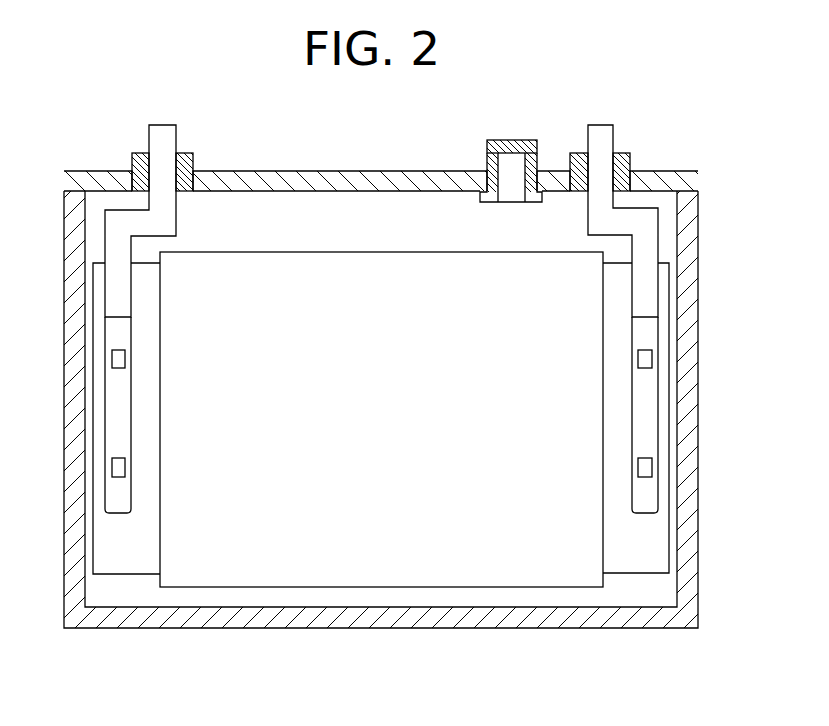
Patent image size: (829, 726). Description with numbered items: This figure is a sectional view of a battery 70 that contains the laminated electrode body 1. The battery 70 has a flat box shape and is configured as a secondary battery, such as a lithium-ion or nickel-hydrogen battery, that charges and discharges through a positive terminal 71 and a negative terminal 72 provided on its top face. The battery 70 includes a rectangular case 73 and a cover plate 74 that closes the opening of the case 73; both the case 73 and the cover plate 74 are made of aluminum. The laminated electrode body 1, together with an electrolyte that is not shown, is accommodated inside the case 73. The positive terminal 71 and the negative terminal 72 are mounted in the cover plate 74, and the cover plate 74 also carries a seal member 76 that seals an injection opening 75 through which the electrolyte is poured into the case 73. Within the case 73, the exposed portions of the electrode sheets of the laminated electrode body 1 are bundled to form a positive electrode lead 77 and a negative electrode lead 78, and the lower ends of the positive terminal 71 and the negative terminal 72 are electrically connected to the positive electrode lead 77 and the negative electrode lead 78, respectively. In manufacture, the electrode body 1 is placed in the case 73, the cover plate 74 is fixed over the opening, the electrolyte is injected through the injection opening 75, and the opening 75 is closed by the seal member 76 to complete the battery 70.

The battery 70 is at (560, 120).
The laminated electrode body 1 is at (366, 588).
The positive terminal 71 is at (611, 128).
The negative terminal 72 is at (172, 130).
The rectangular case 73 is at (694, 234).
The cover plate 74 is at (684, 171).
The injection opening 75 is at (506, 200).
The seal member 76 is at (497, 141).
The positive electrode lead 77 is at (648, 542).
The negative electrode lead 78 is at (116, 548).